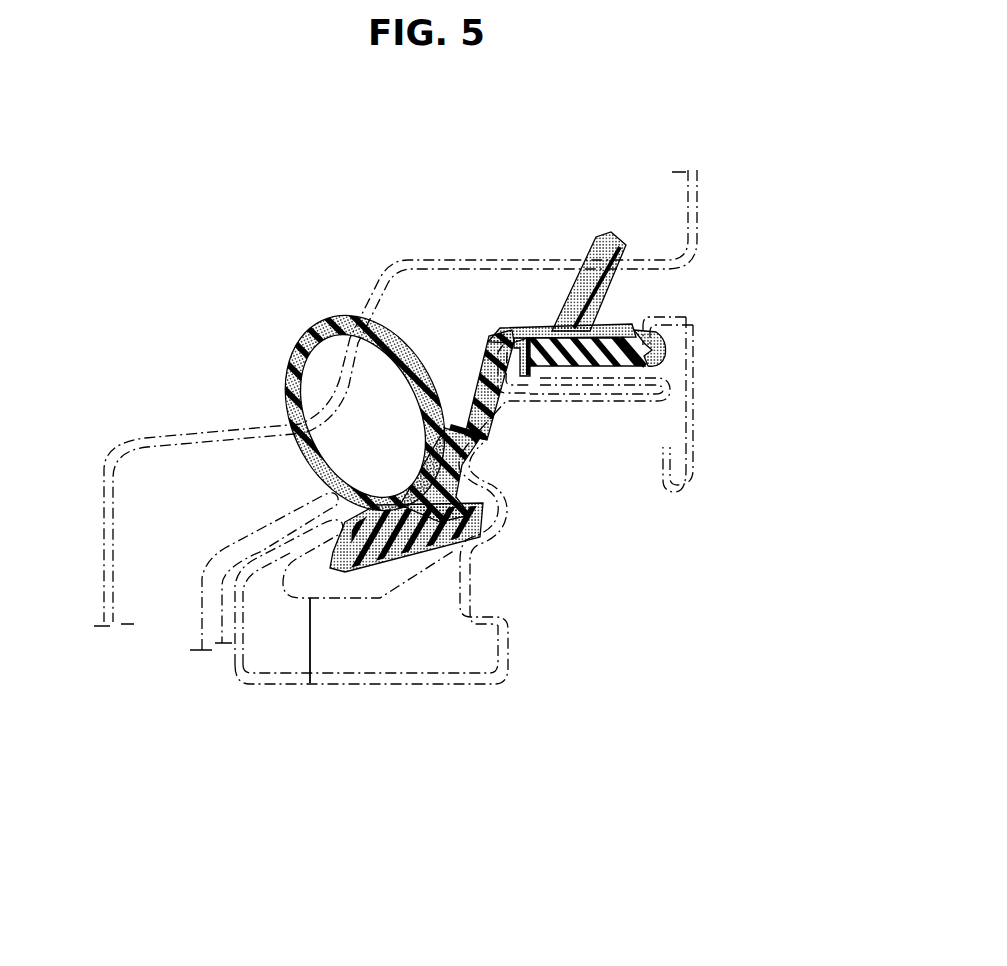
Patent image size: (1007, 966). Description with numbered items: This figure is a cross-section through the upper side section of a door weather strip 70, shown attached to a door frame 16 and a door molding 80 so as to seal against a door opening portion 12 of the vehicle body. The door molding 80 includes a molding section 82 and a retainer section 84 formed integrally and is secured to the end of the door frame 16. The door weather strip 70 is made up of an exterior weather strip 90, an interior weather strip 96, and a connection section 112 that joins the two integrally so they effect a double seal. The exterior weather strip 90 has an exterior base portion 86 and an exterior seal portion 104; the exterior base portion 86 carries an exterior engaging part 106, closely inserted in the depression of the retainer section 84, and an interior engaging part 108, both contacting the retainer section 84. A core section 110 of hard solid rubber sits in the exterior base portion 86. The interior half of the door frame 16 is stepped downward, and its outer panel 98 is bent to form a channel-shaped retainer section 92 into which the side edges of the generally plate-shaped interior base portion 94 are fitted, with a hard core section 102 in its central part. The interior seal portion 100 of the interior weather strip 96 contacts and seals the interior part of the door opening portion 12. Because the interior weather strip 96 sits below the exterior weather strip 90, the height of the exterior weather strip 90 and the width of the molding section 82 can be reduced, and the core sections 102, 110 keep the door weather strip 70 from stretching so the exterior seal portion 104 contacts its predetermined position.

The door opening portion 12 is at (395, 393).
The door frame 16 is at (331, 572).
The door weather strip 70 is at (491, 476).
The door molding 80 is at (743, 399).
The molding section 82 is at (765, 405).
The retainer section 84 is at (574, 448).
The exterior base portion 86 is at (743, 325).
The exterior weather strip 90 is at (664, 336).
The channel-shaped retainer section 92 is at (329, 698).
The interior base portion 94 is at (462, 608).
The interior weather strip 96 is at (368, 416).
The outer panel 98 is at (210, 732).
The interior seal portion 100 is at (368, 402).
The core section 102 is at (462, 531).
The exterior seal portion 104 is at (597, 242).
The exterior engaging part 106 is at (741, 355).
The interior engaging part 108 is at (549, 427).
The core section 110 is at (662, 352).
The connection section 112 is at (489, 333).